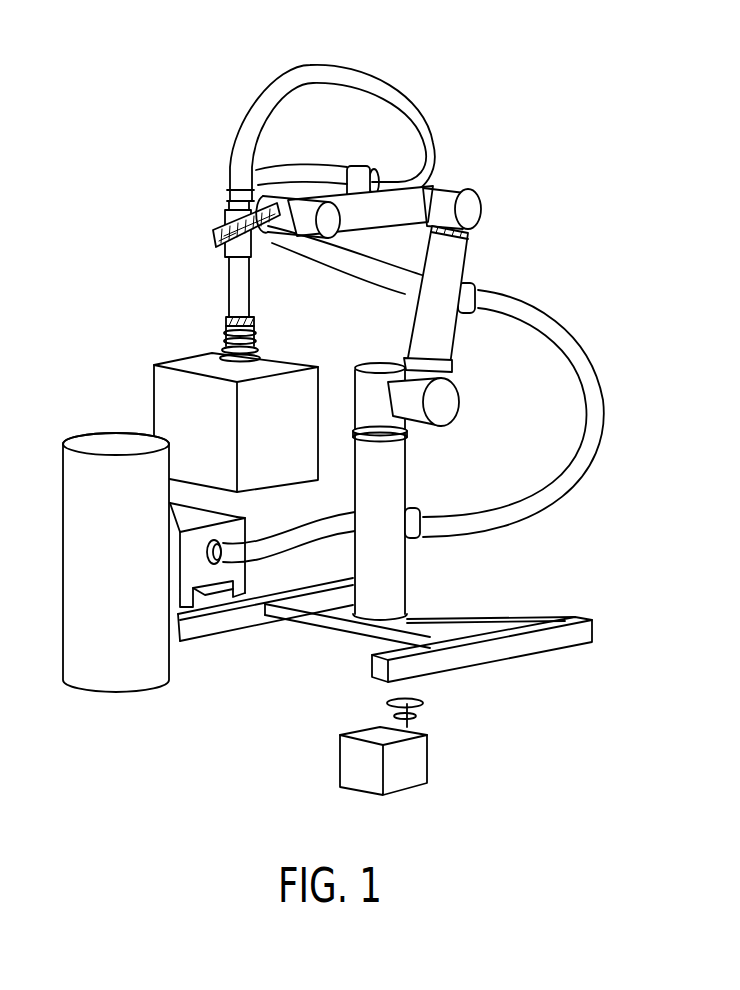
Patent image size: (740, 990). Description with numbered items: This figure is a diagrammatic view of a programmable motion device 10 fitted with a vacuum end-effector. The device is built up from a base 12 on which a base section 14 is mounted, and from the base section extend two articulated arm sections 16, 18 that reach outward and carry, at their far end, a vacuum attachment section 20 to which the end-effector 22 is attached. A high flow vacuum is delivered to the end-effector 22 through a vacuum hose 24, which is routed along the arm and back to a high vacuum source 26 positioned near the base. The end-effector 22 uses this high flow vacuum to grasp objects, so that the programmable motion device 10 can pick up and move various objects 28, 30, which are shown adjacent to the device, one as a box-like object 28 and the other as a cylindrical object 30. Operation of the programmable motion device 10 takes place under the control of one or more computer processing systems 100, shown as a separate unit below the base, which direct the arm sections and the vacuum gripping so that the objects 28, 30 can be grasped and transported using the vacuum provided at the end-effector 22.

The programmable motion device 10 is at (524, 108).
The base 12 is at (572, 618).
The base section 14 is at (395, 580).
The articulated arm section 16 is at (448, 332).
The articulated arm section 18 is at (355, 215).
The vacuum attachment section 20 is at (192, 213).
The end-effector 22 is at (210, 335).
The vacuum hose 24 is at (320, 72).
The high vacuum source 26 is at (247, 525).
The object 28 is at (153, 378).
The object 30 is at (127, 575).
The computer processing system 100 is at (428, 760).